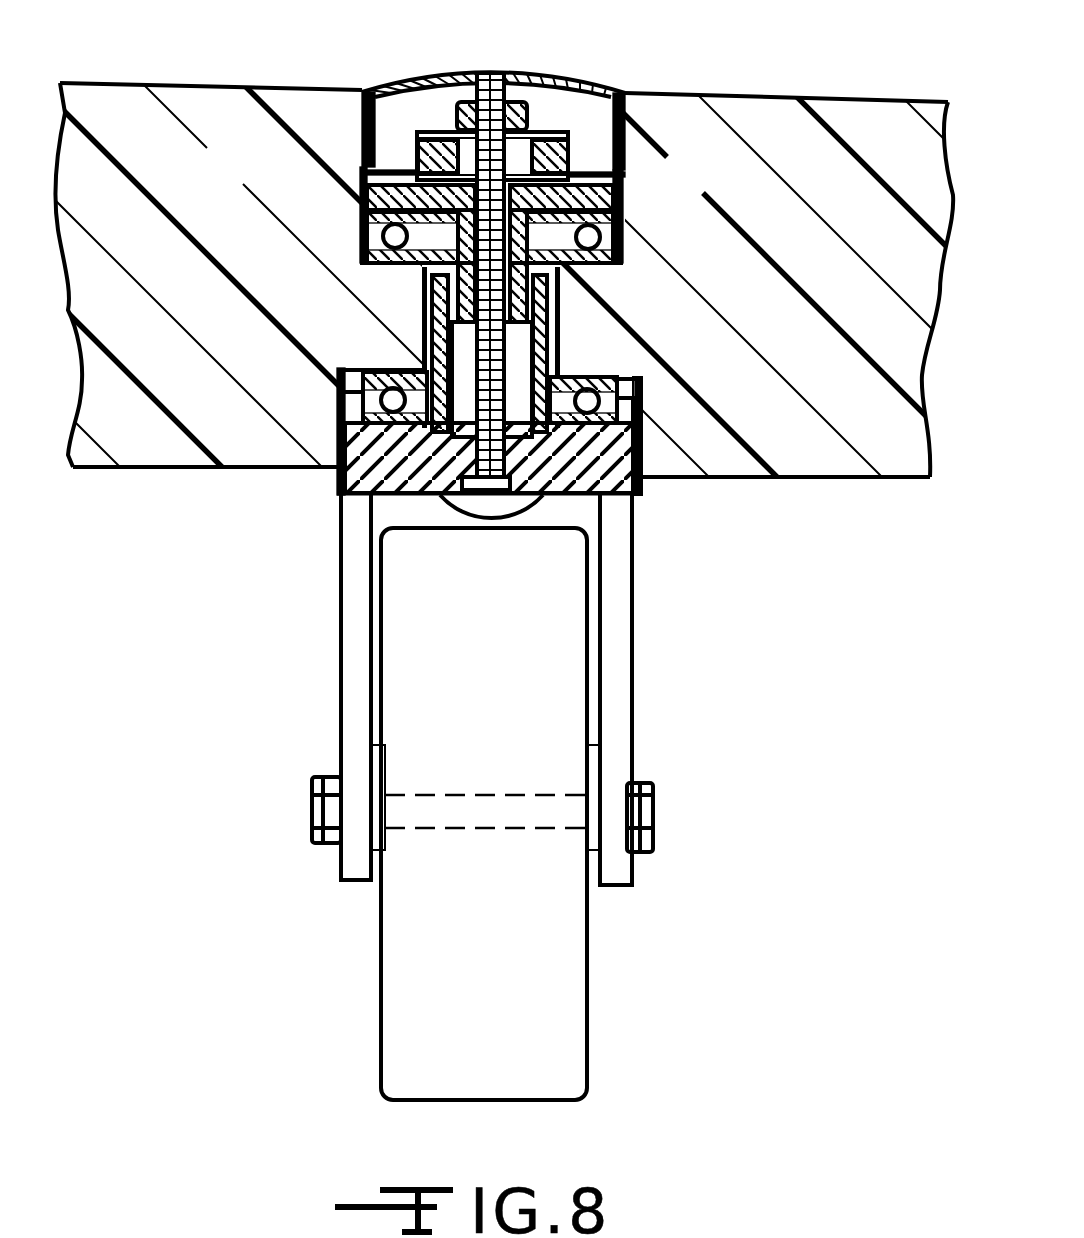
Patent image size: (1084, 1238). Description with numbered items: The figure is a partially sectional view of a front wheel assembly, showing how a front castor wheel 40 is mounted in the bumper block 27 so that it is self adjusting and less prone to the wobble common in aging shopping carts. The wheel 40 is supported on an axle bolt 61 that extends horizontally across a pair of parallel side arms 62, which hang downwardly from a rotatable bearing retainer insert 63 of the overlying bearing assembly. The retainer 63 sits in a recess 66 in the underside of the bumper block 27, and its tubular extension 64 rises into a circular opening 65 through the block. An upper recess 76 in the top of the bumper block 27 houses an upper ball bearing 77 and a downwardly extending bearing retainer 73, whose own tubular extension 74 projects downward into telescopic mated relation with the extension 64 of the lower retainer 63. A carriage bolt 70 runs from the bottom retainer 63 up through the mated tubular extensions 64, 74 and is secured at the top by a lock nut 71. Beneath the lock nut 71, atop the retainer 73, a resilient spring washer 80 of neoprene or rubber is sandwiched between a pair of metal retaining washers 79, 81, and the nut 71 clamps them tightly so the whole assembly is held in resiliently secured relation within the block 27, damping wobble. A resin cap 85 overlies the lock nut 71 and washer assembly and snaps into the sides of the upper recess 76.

The bumper block 27 is at (143, 107).
The resin cap 85 is at (386, 85).
The lock nut 71 is at (505, 100).
The resilient spring washer 80 is at (612, 85).
The metal retaining washer 79 is at (558, 110).
The metal retaining washer 81 is at (615, 178).
The bearing retainer 73 is at (632, 203).
The upper recess 76 is at (358, 193).
The upper ball bearing 77 is at (600, 238).
The circular opening 65 is at (563, 312).
The tubular extension 74 is at (543, 357).
The tubular extension 64 is at (450, 318).
The carriage bolt 70 is at (520, 455).
The recess 66 is at (640, 443).
The bearing retainer insert 63 is at (632, 492).
The side arms 62 is at (357, 718).
The axle bolt 61 is at (655, 818).
The front castor wheel 40 is at (535, 1000).